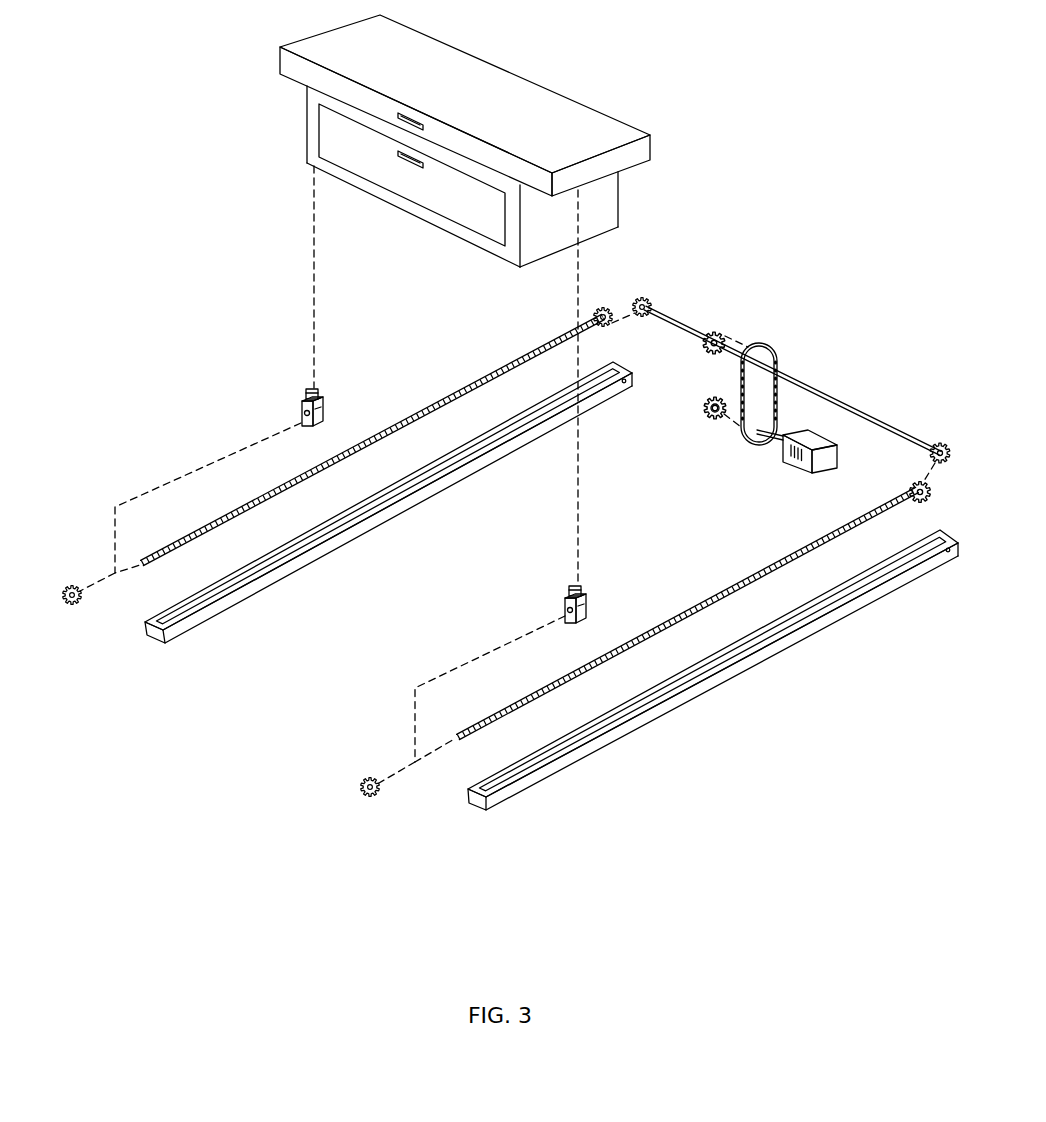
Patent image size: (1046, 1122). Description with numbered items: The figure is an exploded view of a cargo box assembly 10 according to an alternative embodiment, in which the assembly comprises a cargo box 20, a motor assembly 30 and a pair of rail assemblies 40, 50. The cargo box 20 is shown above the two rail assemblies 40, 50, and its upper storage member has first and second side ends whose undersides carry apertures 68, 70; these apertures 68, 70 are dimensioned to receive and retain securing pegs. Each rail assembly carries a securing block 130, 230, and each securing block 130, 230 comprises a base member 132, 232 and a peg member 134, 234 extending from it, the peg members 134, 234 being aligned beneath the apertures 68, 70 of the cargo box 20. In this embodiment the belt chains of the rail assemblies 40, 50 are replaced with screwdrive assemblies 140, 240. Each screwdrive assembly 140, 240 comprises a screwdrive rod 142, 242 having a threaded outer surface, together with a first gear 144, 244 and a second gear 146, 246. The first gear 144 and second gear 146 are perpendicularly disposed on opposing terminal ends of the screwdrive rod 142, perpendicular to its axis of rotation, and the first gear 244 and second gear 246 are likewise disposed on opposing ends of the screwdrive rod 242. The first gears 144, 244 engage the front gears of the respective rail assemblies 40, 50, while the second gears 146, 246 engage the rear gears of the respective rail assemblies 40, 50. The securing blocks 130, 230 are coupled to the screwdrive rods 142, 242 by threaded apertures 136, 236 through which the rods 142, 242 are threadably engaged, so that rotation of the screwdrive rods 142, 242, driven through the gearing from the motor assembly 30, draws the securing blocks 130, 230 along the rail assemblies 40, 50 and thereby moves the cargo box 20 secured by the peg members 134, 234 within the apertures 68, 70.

The cargo box assembly 10 is at (510, 425).
The cargo box 20 is at (472, 141).
The motor assembly 30 is at (828, 294).
The rail assembly 40 is at (371, 497).
The rail assembly 50 is at (592, 649).
The aperture 68 is at (298, 83).
The aperture 70 is at (587, 190).
The securing block 130 is at (313, 410).
The base member 132 is at (303, 427).
The peg member 134 is at (317, 390).
The threaded aperture 136 is at (301, 415).
The screwdrive assembly 140 is at (371, 458).
The screwdrive rod 142 is at (355, 447).
The first gear 144 is at (604, 308).
The second gear 146 is at (72, 606).
The securing block 230 is at (579, 631).
The base member 232 is at (588, 607).
The peg member 234 is at (582, 585).
The threaded aperture 236 is at (565, 614).
The screwdrive assembly 240 is at (578, 649).
The screwdrive rod 242 is at (630, 640).
The first gear 244 is at (906, 488).
The second gear 246 is at (362, 795).